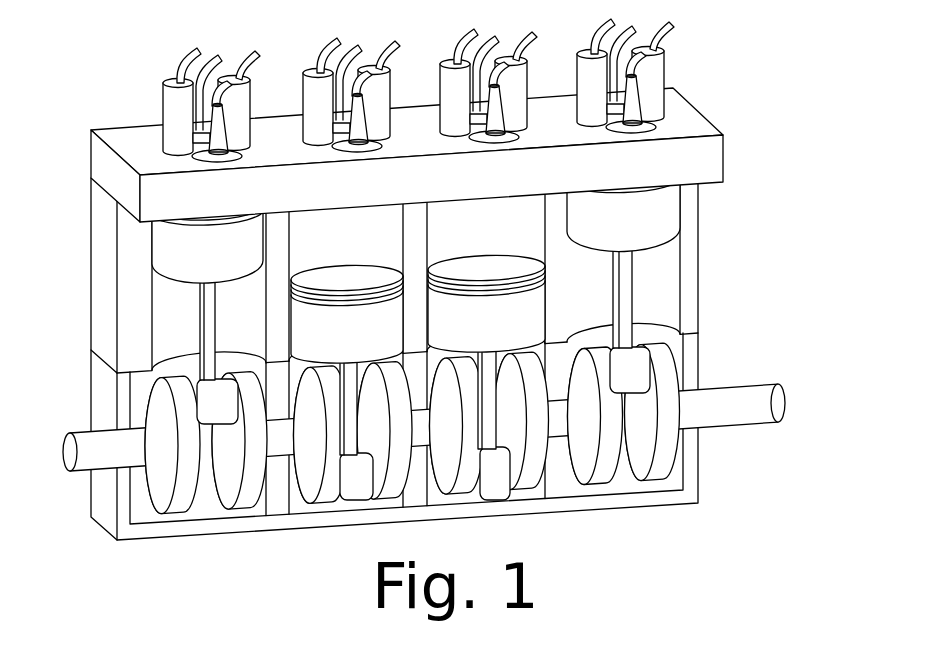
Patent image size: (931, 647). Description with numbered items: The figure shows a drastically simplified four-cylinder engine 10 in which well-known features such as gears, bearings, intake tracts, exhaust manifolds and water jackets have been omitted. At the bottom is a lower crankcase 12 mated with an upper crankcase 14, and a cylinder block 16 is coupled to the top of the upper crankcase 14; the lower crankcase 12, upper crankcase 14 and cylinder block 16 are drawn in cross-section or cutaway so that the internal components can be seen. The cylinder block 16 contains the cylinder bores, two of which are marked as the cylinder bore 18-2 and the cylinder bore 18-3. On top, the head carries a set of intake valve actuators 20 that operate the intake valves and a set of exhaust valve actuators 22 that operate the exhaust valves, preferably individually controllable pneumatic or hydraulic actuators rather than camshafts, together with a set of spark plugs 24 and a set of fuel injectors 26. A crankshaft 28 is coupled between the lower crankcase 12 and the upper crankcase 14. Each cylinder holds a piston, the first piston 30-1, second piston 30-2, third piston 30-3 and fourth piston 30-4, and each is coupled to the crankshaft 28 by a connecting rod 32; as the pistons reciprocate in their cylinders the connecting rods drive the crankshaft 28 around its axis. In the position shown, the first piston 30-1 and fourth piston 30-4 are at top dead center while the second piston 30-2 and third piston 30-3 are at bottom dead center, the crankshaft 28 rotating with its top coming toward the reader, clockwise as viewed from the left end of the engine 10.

The four-cylinder engine 10 is at (146, 574).
The lower crankcase 12 is at (101, 500).
The upper crankcase 14 is at (102, 389).
The cylinder block 16 is at (102, 240).
The cylinder bore 18-2 is at (370, 250).
The cylinder bore 18-3 is at (516, 237).
The intake valve actuator 20 is at (175, 100).
The exhaust valve actuator 22 is at (238, 105).
The spark plug 24 is at (343, 97).
The fuel injector 26 is at (357, 127).
The crankshaft 28 is at (773, 397).
The first piston 30-1 is at (237, 257).
The second piston 30-2 is at (376, 341).
The third piston 30-3 is at (517, 324).
The fourth piston 30-4 is at (652, 232).
The connecting rod 32 is at (625, 300).